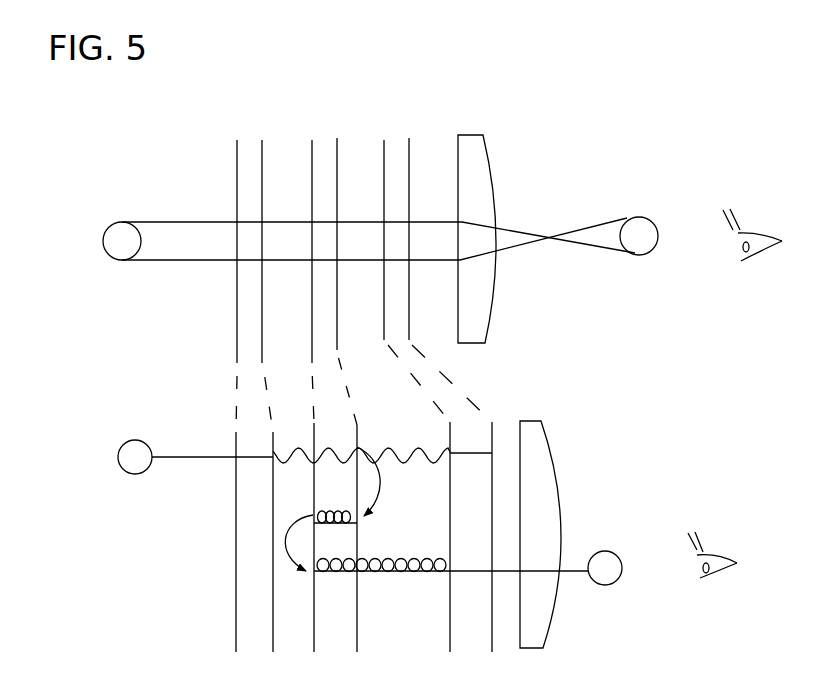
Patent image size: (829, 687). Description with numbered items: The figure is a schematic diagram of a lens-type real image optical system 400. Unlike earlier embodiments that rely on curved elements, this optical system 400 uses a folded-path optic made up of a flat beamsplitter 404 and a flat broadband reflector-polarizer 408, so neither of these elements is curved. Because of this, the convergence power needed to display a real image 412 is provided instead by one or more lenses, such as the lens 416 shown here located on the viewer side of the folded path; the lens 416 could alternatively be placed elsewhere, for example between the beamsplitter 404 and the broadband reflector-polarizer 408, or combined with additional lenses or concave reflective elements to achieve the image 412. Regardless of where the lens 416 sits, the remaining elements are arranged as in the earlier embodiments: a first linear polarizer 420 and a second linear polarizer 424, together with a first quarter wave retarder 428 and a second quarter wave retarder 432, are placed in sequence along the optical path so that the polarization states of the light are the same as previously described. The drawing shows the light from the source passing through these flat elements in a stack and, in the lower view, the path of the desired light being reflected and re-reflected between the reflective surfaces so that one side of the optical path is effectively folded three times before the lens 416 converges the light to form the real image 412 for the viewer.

The optical system 400 is at (553, 121).
The flat beamsplitter 404 is at (337, 137).
The flat broadband reflector-polarizer 408 is at (310, 146).
The real image 412 is at (642, 214).
The lens 416 is at (500, 303).
The first linear polarizer 420 is at (235, 146).
The second linear polarizer 424 is at (410, 137).
The first quarter wave retarder 428 is at (263, 137).
The second quarter wave retarder 432 is at (383, 147).